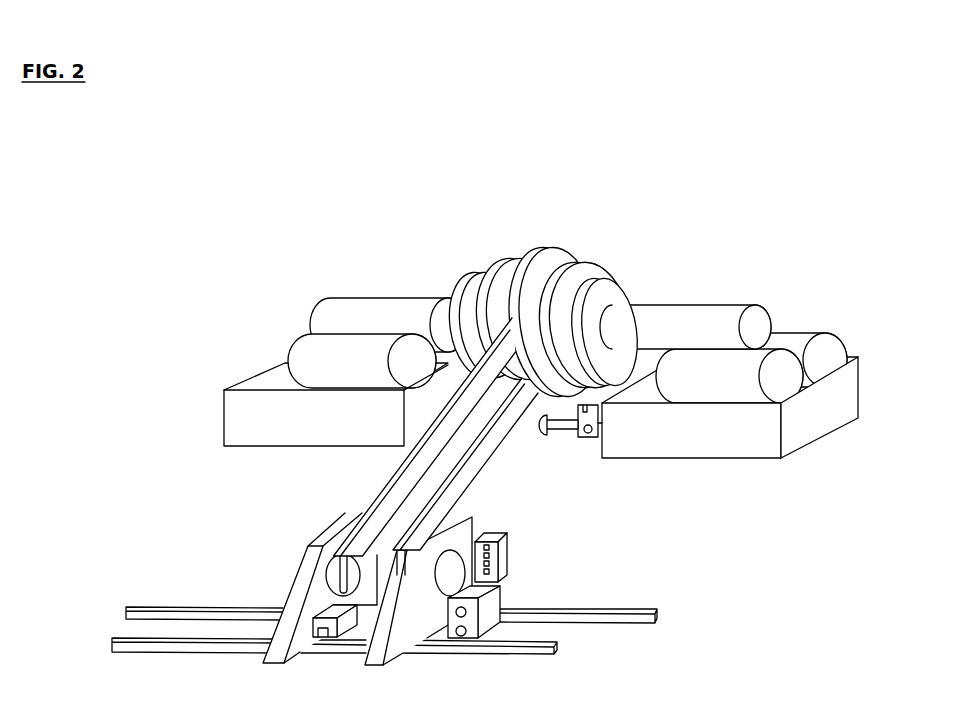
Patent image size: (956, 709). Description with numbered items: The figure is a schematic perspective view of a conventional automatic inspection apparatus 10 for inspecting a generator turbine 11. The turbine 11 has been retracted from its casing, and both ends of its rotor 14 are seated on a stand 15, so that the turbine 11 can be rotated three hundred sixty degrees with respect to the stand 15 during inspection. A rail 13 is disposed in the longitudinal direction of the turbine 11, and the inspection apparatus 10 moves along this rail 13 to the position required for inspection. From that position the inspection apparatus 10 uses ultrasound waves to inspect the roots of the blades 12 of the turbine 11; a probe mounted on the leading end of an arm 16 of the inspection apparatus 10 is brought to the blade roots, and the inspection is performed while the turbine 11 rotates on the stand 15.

The inspection apparatus 10 is at (277, 544).
The turbine 11 is at (570, 239).
The blades 12 is at (592, 270).
The rail 13 is at (637, 600).
The rotor 14 is at (687, 312).
The stand 15 is at (820, 326).
The arm 16 is at (497, 457).